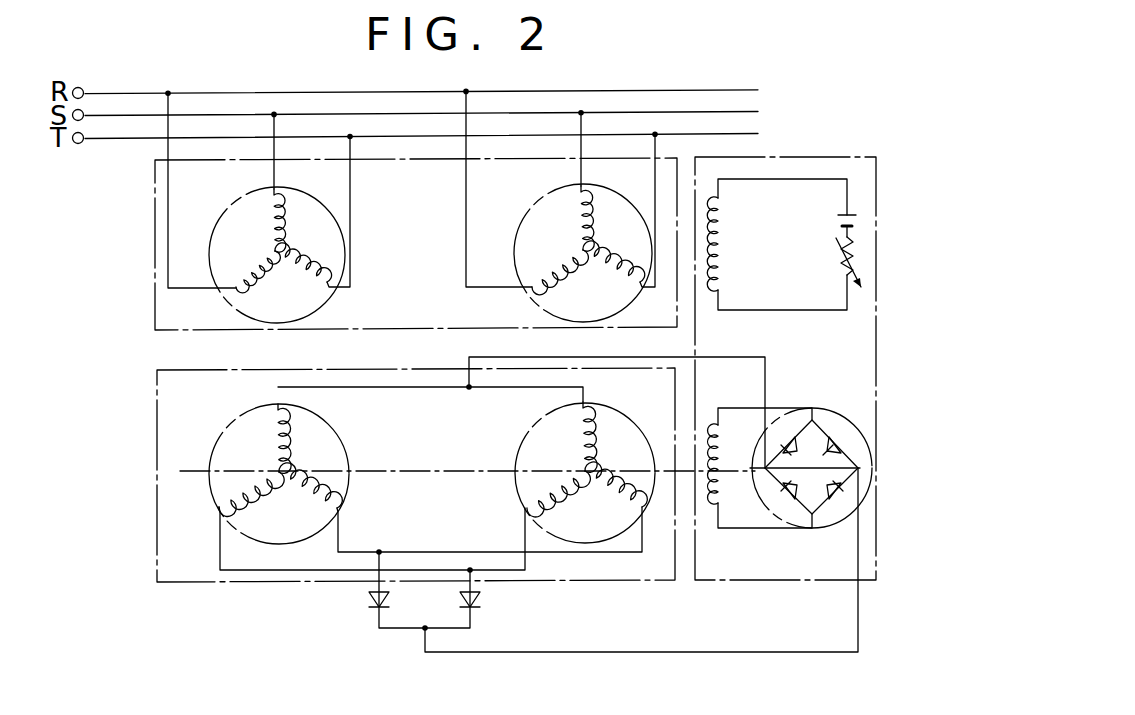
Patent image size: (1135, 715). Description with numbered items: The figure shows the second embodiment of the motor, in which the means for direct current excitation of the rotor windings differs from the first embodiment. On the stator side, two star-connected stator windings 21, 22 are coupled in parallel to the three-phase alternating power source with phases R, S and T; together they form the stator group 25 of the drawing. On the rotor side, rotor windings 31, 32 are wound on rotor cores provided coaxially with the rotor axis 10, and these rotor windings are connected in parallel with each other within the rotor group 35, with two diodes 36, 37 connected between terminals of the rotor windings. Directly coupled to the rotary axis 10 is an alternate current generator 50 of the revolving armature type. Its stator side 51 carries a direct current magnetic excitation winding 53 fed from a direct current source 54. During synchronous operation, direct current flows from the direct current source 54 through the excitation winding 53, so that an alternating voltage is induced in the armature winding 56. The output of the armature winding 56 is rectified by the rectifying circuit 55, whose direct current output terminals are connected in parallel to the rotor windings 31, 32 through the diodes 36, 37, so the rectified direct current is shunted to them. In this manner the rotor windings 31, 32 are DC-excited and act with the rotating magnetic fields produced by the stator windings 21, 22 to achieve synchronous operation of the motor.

The rotor axis 10 is at (192, 475).
The stator winding 21 is at (213, 235).
The stator winding 22 is at (518, 234).
The motor unit 25 is at (155, 285).
The rotor winding 31 is at (218, 446).
The rotor winding 32 is at (517, 456).
The generator unit 35 is at (157, 418).
The diode 36 is at (368, 595).
The diode 37 is at (480, 595).
The alternate current generator 50 is at (843, 156).
The stator side of the alternate current generator 51 is at (857, 180).
The direct current magnetic excitation winding 53 is at (733, 290).
The direct current source 54 is at (858, 256).
The rectifying circuit 55 is at (848, 418).
The armature winding 56 is at (733, 500).